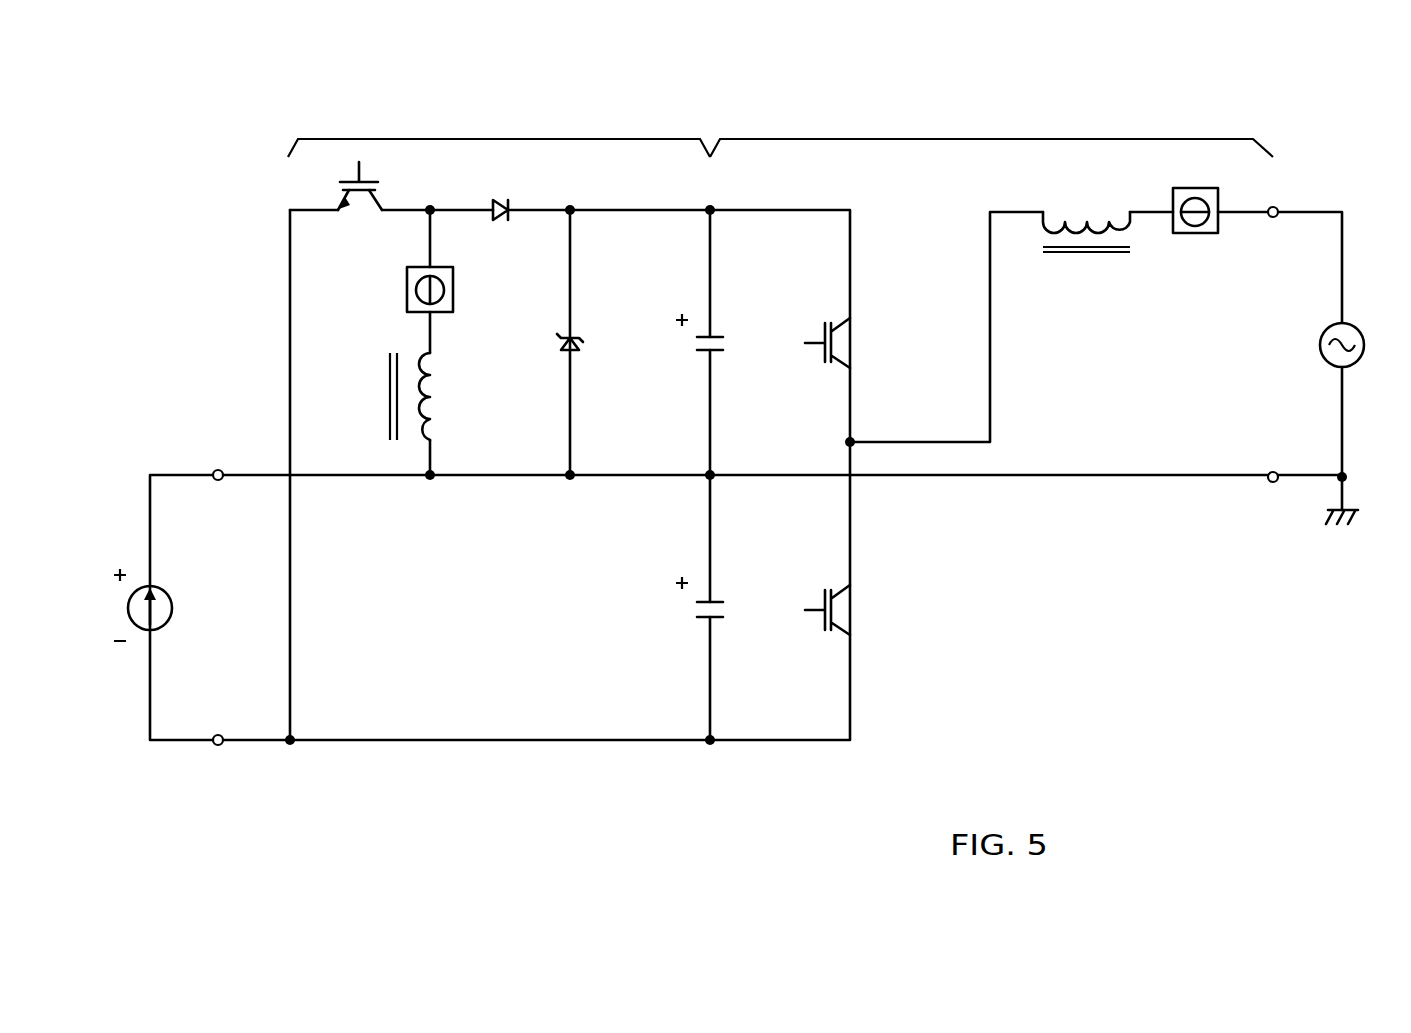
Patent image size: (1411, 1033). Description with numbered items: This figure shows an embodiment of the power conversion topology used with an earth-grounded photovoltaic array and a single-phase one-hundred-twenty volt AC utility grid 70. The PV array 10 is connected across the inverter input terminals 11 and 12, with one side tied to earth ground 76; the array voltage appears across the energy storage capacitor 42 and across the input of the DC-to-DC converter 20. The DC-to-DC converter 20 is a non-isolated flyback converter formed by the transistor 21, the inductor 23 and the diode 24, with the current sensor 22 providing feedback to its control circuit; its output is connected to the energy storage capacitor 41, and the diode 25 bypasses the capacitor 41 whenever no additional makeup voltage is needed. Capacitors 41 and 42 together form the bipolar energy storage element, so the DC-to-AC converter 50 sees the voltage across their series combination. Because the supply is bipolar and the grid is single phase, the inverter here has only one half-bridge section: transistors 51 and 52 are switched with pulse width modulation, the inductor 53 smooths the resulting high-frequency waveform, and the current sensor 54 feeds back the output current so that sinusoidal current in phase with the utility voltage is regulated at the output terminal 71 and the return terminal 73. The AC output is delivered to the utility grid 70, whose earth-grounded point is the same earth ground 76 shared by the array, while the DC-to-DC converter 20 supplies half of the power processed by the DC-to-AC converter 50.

The PV array 10 is at (164, 605).
The inverter input terminal 11 is at (217, 493).
The inverter input terminal 12 is at (217, 722).
The DC-to-DC converter 20 is at (499, 251).
The transistor 21 is at (360, 204).
The current sensor 22 is at (407, 289).
The inductor 23 is at (434, 396).
The diode 24 is at (502, 230).
The diode 25 is at (592, 343).
The energy storage capacitor 41 is at (720, 336).
The energy storage capacitor 42 is at (721, 601).
The DC-to-AC converter 50 is at (991, 349).
The transistor 51 is at (849, 343).
The transistor 52 is at (849, 610).
The inductor 53 is at (1086, 250).
The current sensor 54 is at (1195, 231).
The utility grid 70 is at (1365, 345).
The output terminal 71 is at (1272, 229).
The neutral terminal 73 is at (1272, 458).
The earth ground 76 is at (1363, 518).